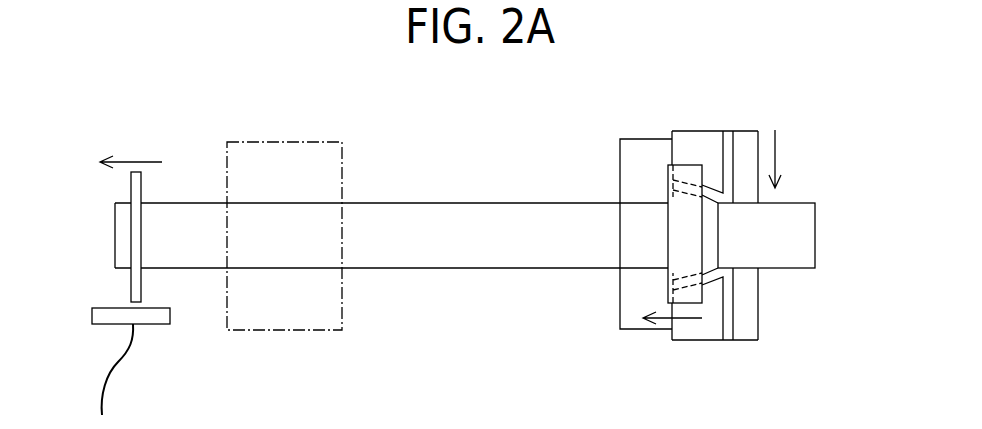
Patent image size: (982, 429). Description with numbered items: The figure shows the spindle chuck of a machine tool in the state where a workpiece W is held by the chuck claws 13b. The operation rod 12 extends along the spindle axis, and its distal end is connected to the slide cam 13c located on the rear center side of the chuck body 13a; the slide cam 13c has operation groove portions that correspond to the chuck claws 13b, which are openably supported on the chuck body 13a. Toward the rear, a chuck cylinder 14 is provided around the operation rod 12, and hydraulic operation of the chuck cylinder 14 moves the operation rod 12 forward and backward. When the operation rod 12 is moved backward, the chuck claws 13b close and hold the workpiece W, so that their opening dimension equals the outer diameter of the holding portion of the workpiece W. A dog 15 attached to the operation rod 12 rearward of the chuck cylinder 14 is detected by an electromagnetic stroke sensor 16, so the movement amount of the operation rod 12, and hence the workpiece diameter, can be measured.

The operation rod 12 is at (465, 203).
The chuck body 13a is at (700, 140).
The chuck claws 13b is at (748, 140).
The slide cam 13c is at (680, 235).
The chuck cylinder 14 is at (300, 330).
The dog 15 is at (130, 287).
The electromagnetic stroke sensor 16 is at (153, 324).
The workpiece W is at (807, 233).